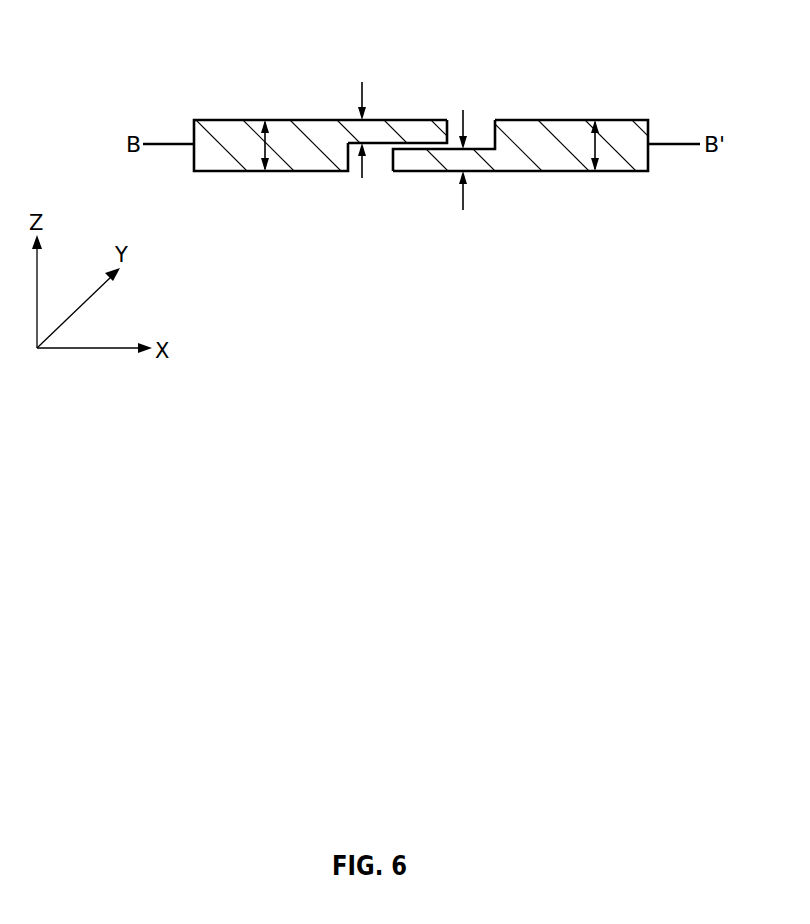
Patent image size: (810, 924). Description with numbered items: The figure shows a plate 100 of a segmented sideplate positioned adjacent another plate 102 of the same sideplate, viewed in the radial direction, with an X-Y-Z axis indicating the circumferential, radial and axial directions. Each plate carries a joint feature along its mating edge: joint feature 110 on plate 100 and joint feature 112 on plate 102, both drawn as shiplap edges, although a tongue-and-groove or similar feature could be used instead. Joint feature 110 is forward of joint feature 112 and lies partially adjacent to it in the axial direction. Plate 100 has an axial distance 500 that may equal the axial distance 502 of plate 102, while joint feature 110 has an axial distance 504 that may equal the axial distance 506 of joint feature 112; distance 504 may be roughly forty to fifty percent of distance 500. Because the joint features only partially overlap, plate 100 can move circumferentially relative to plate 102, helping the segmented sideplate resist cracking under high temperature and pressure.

The plate 100 is at (224, 127).
The plate 102 is at (624, 120).
The joint feature 110 is at (393, 118).
The joint feature 112 is at (433, 171).
The axial distance 500 is at (267, 143).
The axial distance 502 is at (597, 143).
The distance 504 is at (363, 130).
The distance 506 is at (465, 156).